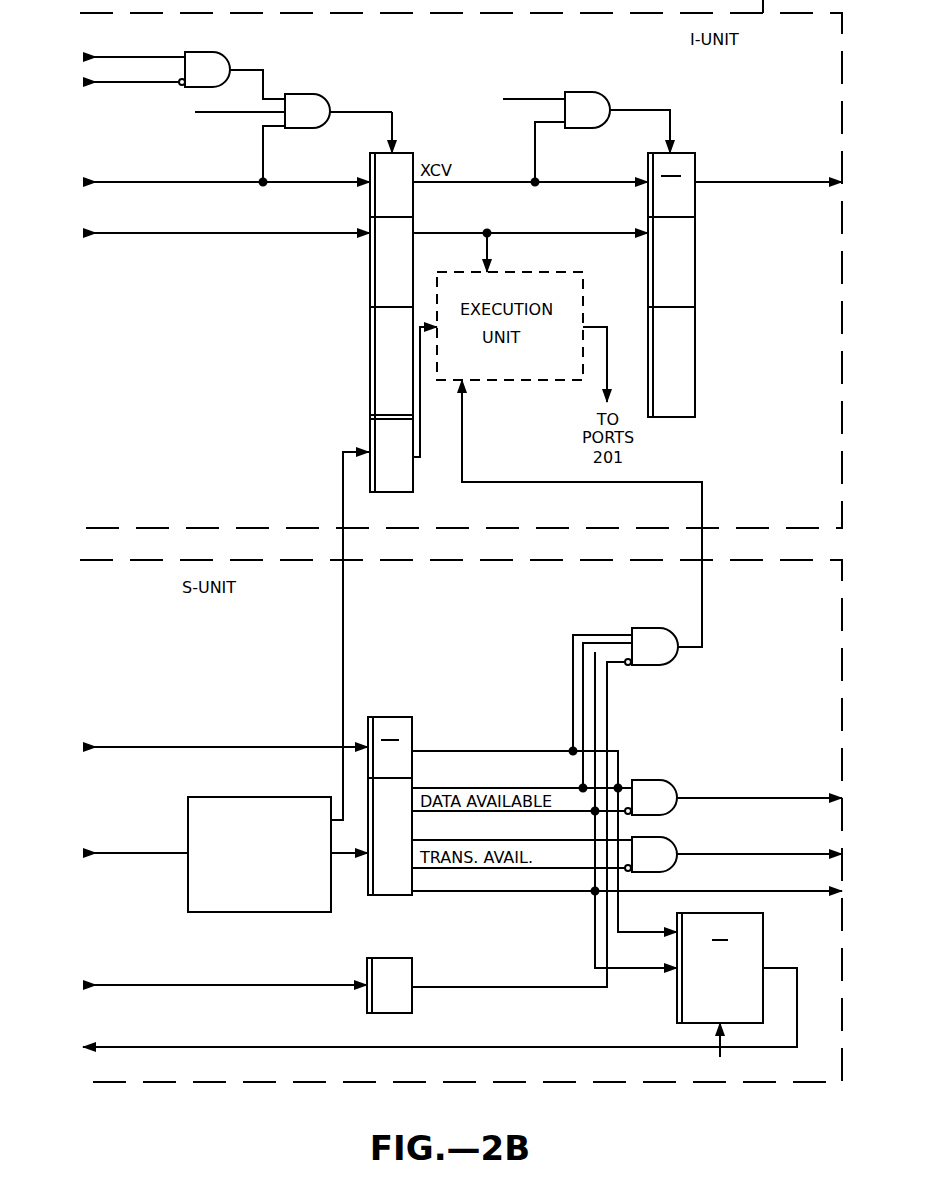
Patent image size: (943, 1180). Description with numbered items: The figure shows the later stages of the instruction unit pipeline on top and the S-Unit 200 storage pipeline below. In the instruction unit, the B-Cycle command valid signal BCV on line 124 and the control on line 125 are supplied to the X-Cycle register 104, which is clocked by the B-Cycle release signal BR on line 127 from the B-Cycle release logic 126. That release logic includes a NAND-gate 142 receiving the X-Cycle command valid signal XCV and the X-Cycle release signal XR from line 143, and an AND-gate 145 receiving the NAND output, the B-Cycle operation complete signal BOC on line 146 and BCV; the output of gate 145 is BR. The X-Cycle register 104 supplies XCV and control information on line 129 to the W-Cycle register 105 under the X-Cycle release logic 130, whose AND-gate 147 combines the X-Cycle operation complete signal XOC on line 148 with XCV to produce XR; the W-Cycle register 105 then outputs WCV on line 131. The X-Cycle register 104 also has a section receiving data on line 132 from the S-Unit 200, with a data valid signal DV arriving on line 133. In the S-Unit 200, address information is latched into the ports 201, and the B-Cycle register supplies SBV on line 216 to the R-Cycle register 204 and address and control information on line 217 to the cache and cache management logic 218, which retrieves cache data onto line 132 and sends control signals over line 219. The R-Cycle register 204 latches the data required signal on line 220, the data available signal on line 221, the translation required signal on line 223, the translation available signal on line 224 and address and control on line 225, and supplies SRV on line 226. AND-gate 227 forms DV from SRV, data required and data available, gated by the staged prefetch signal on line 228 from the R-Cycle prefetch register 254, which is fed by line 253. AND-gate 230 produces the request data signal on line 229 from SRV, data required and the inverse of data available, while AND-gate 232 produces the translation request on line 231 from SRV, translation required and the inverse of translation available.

The X-Cycle register 104 is at (369, 372).
The W-Cycle register 105 is at (696, 368).
The line carrying B-Cycle command valid signal BCV 124 is at (240, 182).
The control line 125 is at (133, 236).
The B-Cycle release logic 126 is at (315, 70).
The line carrying B-Cycle release signal BR 127 is at (385, 112).
The control information line 129 is at (578, 235).
The X-Cycle release logic 130 is at (598, 73).
The line carrying W-Cycle command valid signal WCV 131 is at (815, 182).
The data line 132 is at (343, 497).
The line carrying data valid signal DV 133 is at (462, 420).
The NAND-gate 142 is at (222, 52).
The line carrying X-Cycle release signal XR 143 is at (672, 116).
The AND-gate 145 is at (313, 128).
The line carrying B-Cycle operation complete signal BOC 146 is at (222, 114).
The AND-gate 147 is at (592, 130).
The line carrying X-Cycle operation complete signal XOC 148 is at (557, 97).
The S-Unit 200 is at (255, 560).
The ports 201 is at (763, 942).
The R-Cycle register 204 is at (400, 897).
The line carrying S-Unit B-Cycle valid signal SBV 216 is at (268, 747).
The address and control information line 217 is at (180, 853).
The cache and cache management logic 218 is at (257, 797).
The cache control signal line 219 is at (340, 856).
The line carrying data required signal 220 is at (418, 786).
The line carrying data available signal 221 is at (583, 788).
The line carrying translation required signal 223 is at (548, 840).
The line carrying translation available signal 224 is at (418, 893).
The address and control information line 225 is at (517, 893).
The line carrying S-Unit R-Cycle valid signal SRV 226 is at (495, 751).
The AND-gate 227 is at (647, 628).
The line carrying staged prefetch request signal 228 is at (607, 693).
The line carrying request data from main storage unit signal 229 is at (835, 798).
The AND-gate 230 is at (660, 780).
The line carrying translation request signal 231 is at (826, 854).
The AND-gate 232 is at (652, 846).
The line carrying B-Cycle prefetch signal 253 is at (182, 985).
The R-Cycle prefetch register 254 is at (367, 968).